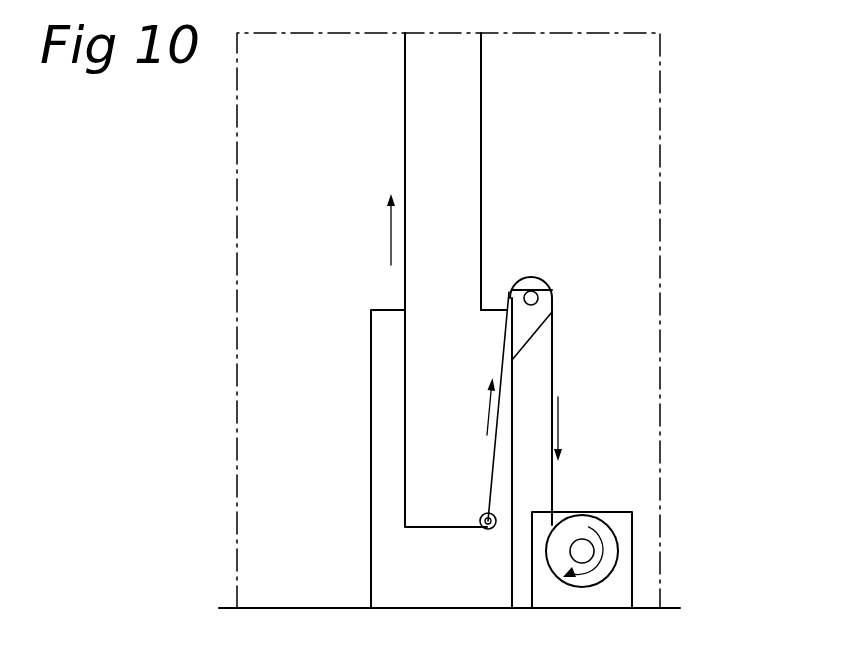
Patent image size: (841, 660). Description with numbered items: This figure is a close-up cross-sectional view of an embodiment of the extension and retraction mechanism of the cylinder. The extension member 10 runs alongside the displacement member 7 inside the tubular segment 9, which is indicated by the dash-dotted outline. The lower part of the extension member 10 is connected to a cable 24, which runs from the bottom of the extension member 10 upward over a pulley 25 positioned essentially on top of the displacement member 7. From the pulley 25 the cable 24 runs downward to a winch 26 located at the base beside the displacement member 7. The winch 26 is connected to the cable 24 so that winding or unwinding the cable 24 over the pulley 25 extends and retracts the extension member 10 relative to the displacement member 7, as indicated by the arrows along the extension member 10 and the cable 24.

The displacement member 7 is at (392, 568).
The tubular segment 9 is at (660, 335).
The extension member 10 is at (460, 93).
The cable 24 is at (552, 367).
The pulley 25 is at (533, 283).
The winch 26 is at (612, 547).